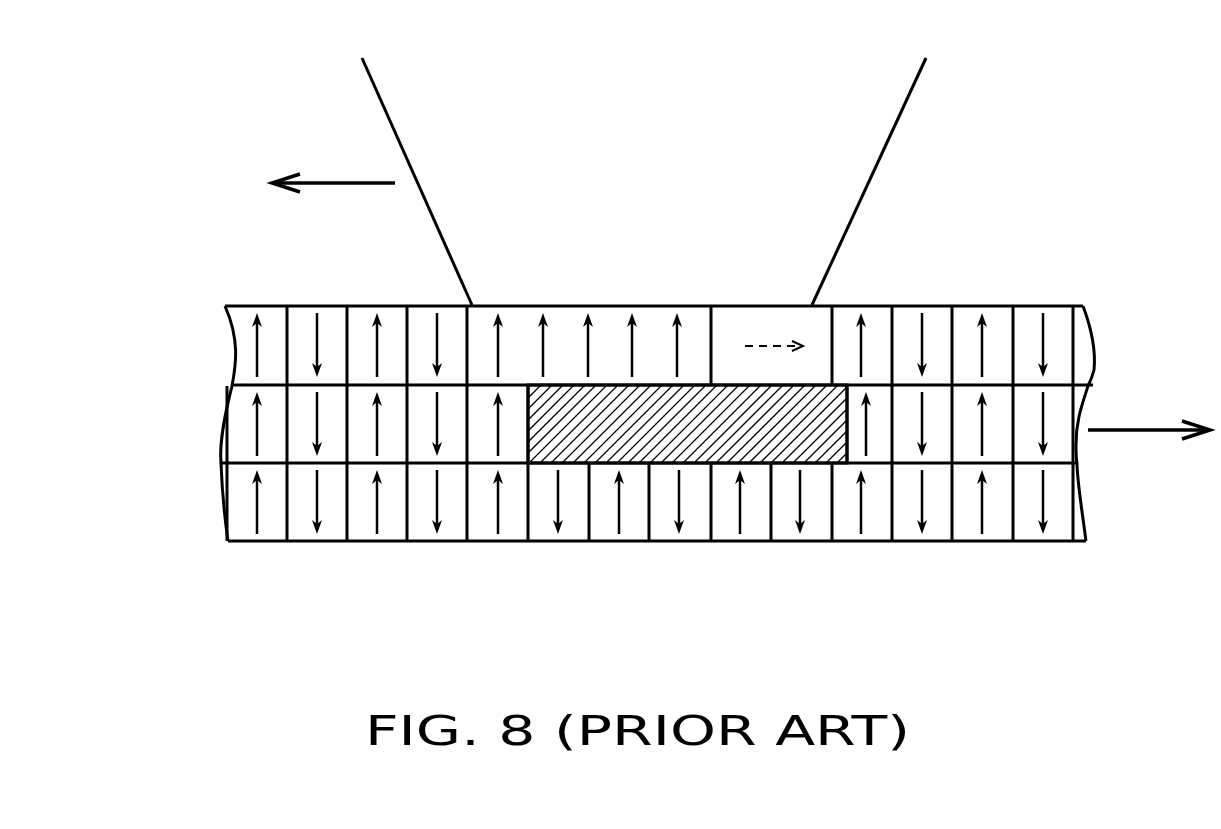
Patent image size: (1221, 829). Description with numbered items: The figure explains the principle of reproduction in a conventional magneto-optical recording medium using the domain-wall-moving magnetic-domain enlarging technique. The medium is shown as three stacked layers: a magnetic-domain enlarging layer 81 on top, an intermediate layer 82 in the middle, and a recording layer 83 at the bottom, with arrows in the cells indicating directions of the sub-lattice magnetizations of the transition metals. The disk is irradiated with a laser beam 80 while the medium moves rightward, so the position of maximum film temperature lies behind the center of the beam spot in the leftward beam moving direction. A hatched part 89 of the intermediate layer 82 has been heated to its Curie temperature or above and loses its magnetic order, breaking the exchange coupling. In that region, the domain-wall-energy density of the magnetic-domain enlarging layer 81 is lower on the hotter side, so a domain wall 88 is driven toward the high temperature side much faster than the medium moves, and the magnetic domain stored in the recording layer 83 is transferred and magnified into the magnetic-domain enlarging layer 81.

The laser beam 80 is at (845, 166).
The magnetic-domain enlarging layer 81 is at (237, 340).
The intermediate layer 82 is at (237, 427).
The recording layer 83 is at (237, 507).
The domain wall 88 is at (712, 345).
The part 89 is at (668, 463).